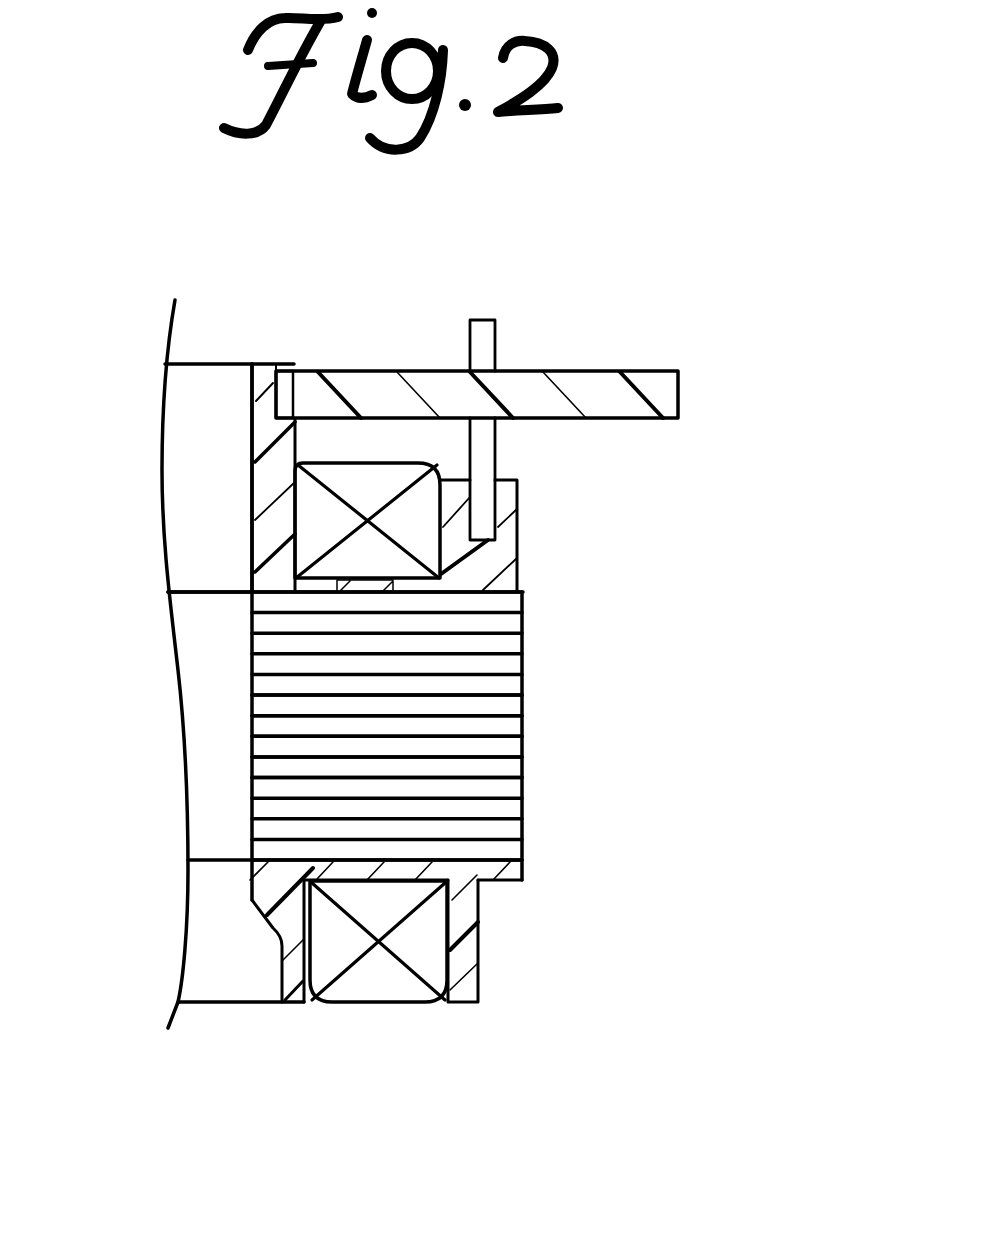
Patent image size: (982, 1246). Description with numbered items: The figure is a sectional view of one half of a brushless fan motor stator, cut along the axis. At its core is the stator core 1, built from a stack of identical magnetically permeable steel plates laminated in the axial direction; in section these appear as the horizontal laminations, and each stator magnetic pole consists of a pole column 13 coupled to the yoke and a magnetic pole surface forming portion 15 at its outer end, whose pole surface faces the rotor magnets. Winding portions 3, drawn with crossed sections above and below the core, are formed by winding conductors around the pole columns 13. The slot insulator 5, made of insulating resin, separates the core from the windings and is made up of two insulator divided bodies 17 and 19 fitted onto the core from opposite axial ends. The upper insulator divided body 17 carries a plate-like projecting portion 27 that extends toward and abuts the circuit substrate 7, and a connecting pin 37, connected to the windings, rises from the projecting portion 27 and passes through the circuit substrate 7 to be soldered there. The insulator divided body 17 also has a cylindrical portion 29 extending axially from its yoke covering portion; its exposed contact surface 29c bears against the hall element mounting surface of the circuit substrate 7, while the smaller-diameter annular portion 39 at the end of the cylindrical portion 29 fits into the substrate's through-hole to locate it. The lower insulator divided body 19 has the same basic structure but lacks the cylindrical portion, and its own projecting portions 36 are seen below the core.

The stator core 1 is at (208, 684).
The winding portions 3 is at (370, 553).
The slot insulator 5 is at (213, 503).
The circuit substrate 7 is at (580, 383).
The pole column 13 is at (375, 747).
The magnetic pole surface forming portion 15 is at (503, 663).
The insulator divided body 17 is at (238, 440).
The insulator divided body 19 is at (266, 945).
The projecting portion 27 is at (507, 533).
The cylindrical portion 29 is at (250, 560).
The contact surface 29c is at (293, 363).
The projecting portions 36 is at (470, 948).
The connecting pin 37 is at (493, 318).
The annular portion 39 is at (270, 382).